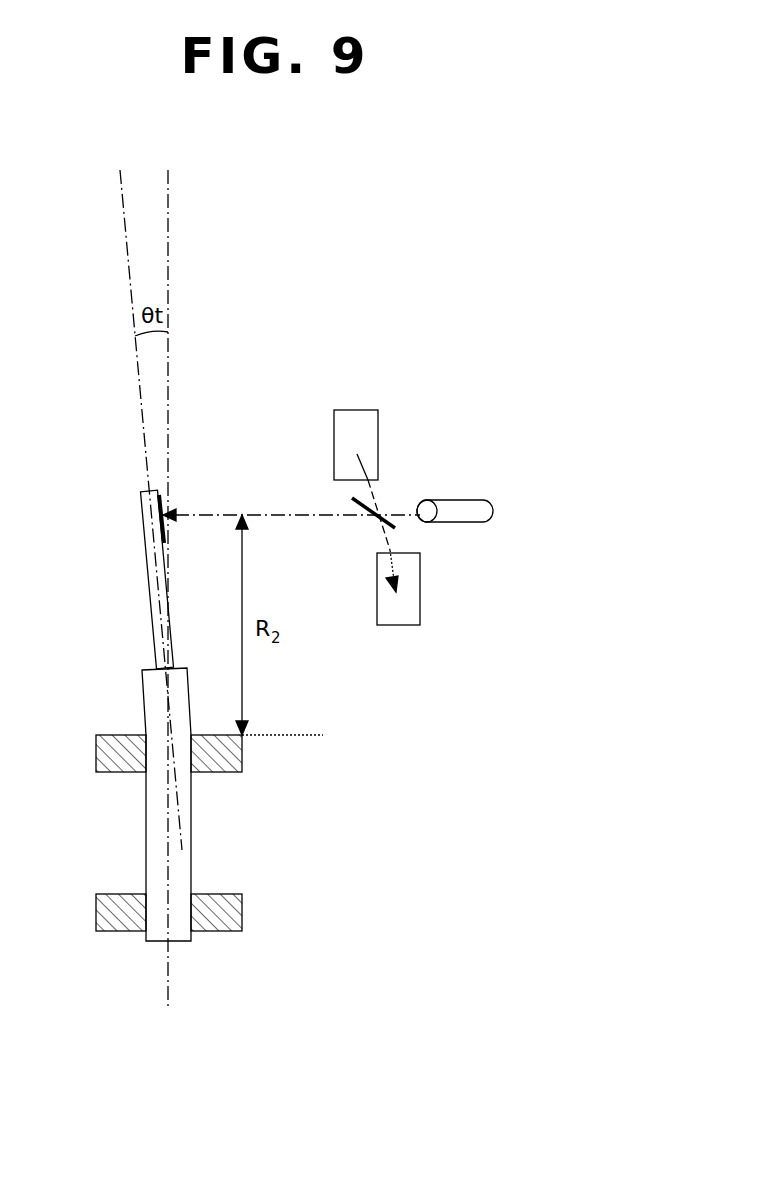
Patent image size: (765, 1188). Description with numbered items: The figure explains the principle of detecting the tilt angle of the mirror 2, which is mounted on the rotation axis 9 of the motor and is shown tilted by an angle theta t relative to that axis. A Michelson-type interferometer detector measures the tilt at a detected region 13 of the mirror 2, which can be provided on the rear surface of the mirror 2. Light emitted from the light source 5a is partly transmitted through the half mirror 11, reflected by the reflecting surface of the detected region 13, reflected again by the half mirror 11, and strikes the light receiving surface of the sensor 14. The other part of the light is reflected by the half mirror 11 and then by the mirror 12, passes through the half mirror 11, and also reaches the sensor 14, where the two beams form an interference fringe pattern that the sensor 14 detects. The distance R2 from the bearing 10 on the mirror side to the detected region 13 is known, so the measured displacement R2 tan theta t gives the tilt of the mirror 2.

The mirror 2 is at (145, 557).
The detected region 13 is at (165, 510).
The rotation axis 9 is at (160, 830).
The bearing 10 is at (242, 755).
The mirror 12 is at (357, 410).
The half mirror 11 is at (392, 515).
The sensor 14 is at (420, 583).
The light source 5a is at (494, 511).